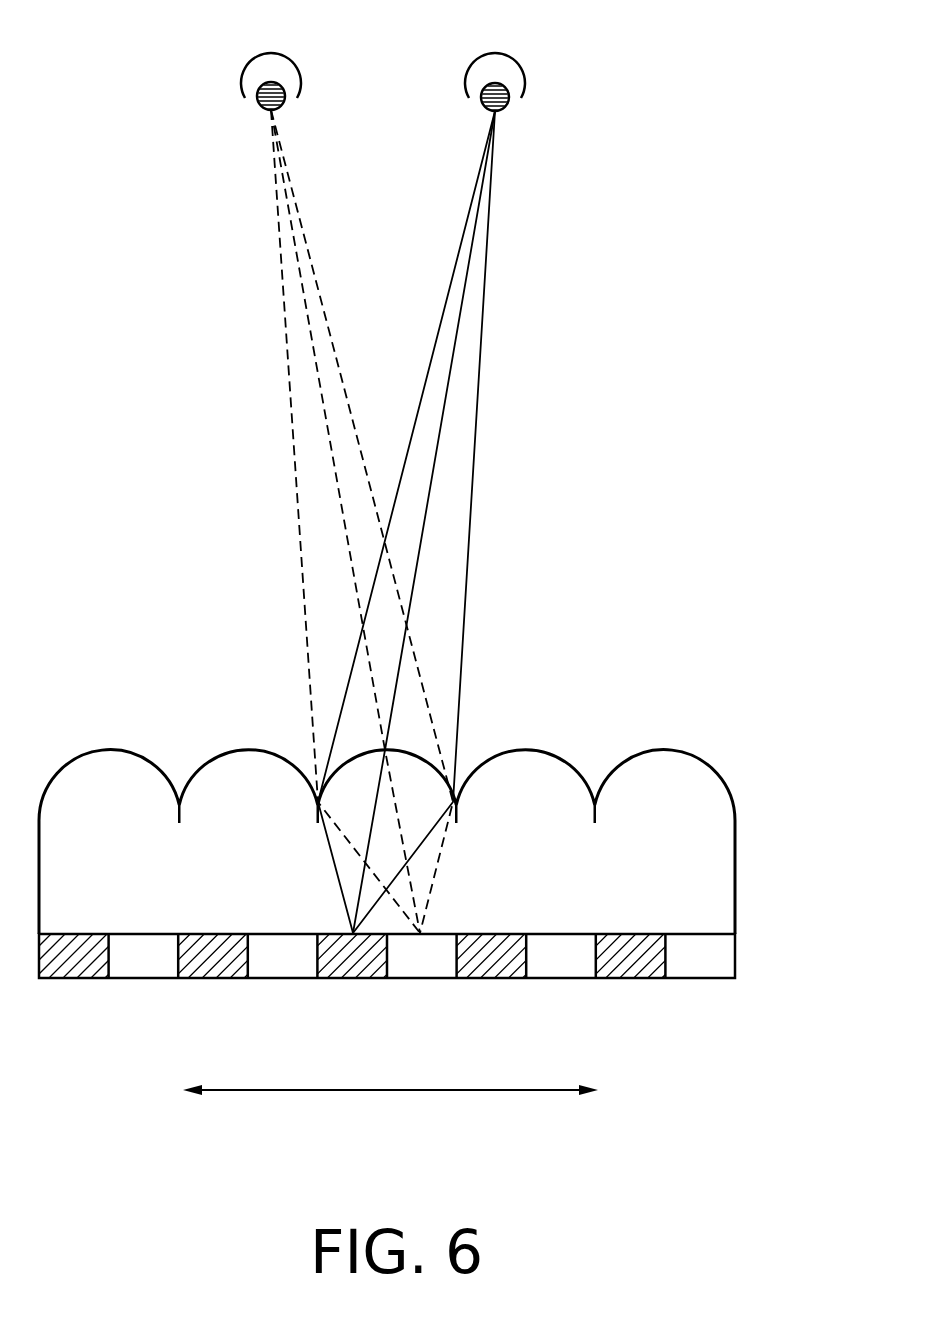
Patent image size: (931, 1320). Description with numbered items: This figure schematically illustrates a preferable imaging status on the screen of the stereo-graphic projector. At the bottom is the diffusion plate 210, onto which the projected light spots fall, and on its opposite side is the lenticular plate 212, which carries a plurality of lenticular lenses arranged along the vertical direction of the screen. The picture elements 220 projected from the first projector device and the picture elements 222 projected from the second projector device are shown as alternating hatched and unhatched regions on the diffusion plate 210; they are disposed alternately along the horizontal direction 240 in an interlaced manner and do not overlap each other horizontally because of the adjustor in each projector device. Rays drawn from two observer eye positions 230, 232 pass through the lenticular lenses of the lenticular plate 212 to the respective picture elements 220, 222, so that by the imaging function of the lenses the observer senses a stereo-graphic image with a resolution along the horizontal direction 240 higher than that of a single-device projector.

The diffusion plate 210 is at (735, 958).
The lenticular plate 212 is at (733, 843).
The picture elements 220 is at (352, 968).
The picture elements 222 is at (430, 968).
The left eye 230 is at (257, 90).
The right eye 232 is at (508, 82).
The horizontal direction 240 is at (398, 1090).